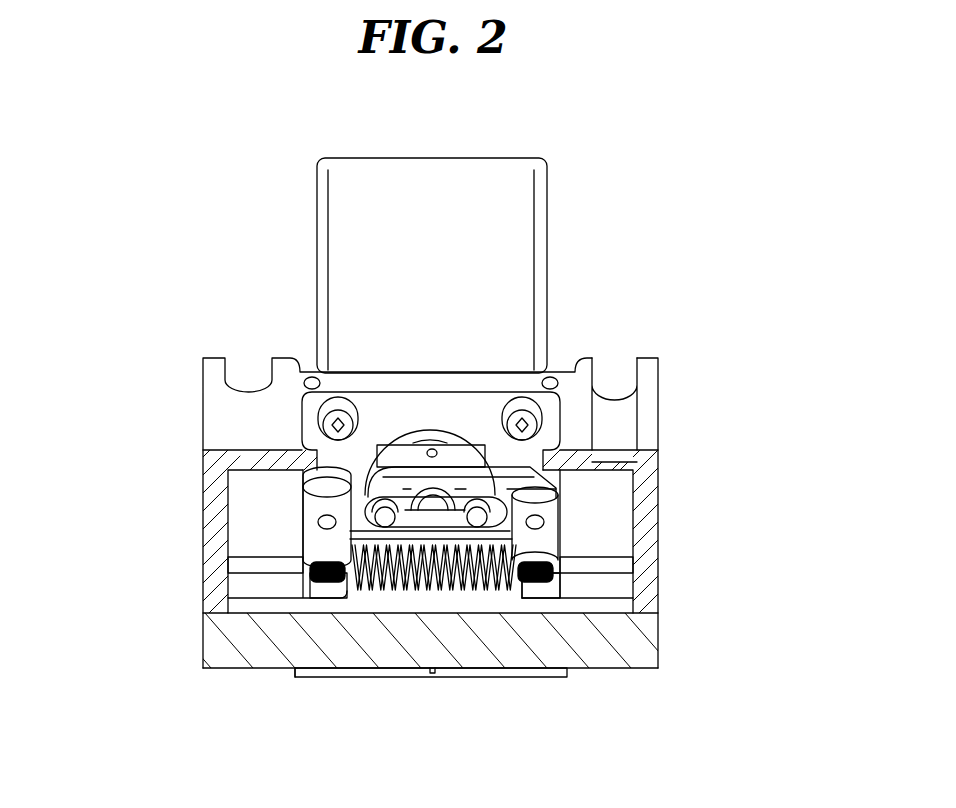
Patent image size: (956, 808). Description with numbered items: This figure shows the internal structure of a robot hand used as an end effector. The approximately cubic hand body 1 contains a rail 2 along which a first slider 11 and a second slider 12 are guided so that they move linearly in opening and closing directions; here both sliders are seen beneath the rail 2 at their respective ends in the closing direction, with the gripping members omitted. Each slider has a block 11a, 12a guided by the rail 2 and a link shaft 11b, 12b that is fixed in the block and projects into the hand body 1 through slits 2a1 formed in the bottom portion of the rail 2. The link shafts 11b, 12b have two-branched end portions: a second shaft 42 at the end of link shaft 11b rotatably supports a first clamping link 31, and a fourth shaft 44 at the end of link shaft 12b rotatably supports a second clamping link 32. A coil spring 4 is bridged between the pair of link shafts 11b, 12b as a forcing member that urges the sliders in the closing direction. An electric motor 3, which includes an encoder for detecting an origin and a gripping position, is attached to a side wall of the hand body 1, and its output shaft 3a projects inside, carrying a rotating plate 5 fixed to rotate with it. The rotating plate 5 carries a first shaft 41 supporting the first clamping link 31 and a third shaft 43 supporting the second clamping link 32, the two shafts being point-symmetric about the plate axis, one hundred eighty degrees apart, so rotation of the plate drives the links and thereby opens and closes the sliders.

The hand body 1 is at (232, 410).
The rail 2 is at (637, 642).
The slits 2a1 is at (252, 585).
The electric motor 3 is at (490, 220).
The output shaft 3a is at (436, 440).
The coil spring 4 is at (440, 592).
The rotating plate 5 is at (400, 453).
The first slider 11 is at (360, 678).
The block 11a is at (315, 678).
The link shaft 11b is at (313, 550).
The second slider 12 is at (470, 560).
The block 12a is at (543, 678).
The link shaft 12b is at (545, 552).
The first clamping link 31 is at (410, 548).
The second clamping link 32 is at (462, 485).
The first shaft 41 is at (485, 530).
The second shaft 42 is at (310, 533).
The third shaft 43 is at (385, 528).
The fourth shaft 44 is at (547, 530).